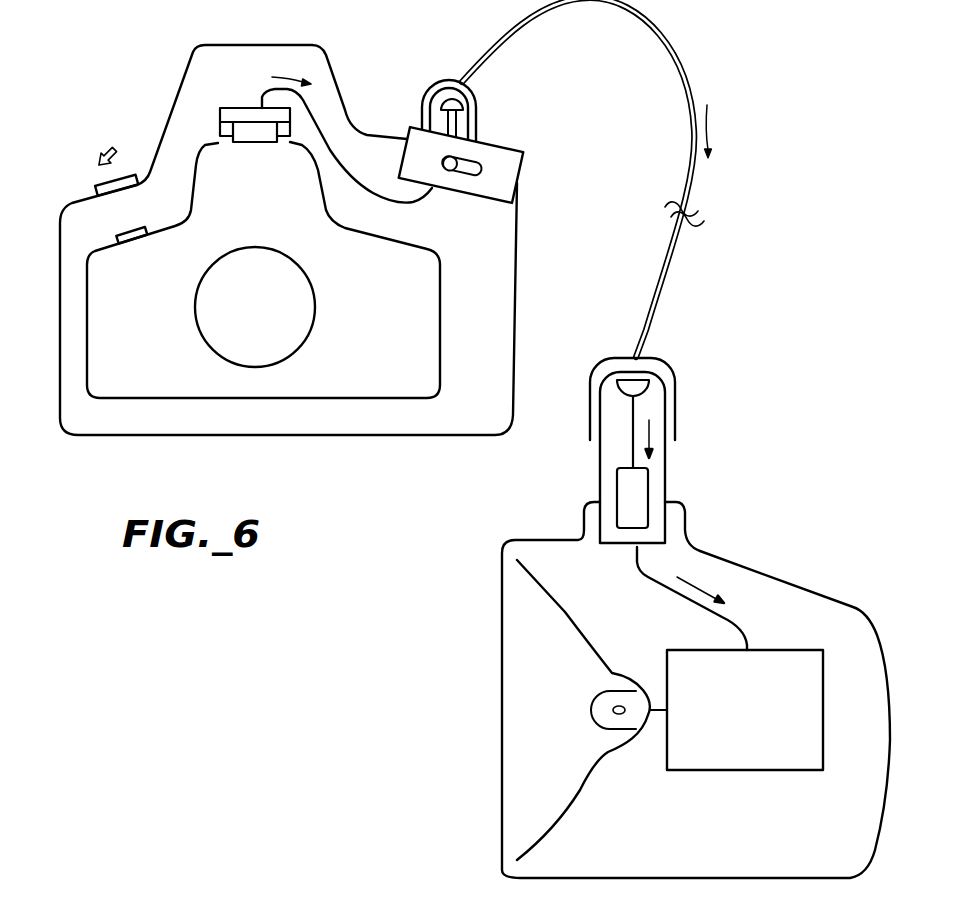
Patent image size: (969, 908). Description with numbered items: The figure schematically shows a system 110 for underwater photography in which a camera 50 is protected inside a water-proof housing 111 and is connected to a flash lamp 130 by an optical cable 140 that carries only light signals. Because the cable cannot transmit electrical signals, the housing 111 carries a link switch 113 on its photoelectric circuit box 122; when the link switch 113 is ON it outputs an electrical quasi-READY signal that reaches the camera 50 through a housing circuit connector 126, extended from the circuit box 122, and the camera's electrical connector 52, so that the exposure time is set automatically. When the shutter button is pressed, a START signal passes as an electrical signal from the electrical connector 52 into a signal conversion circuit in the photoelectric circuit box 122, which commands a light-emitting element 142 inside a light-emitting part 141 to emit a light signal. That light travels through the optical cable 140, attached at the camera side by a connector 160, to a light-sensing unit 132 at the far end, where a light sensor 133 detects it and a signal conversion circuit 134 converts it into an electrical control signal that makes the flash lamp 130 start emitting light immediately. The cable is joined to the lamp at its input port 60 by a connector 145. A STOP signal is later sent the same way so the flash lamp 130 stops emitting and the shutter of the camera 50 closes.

The camera 50 is at (167, 380).
The electrical connector 52 is at (250, 142).
The input port 60 is at (685, 533).
The system 110 is at (765, 125).
The water-proof housing 111 is at (330, 437).
The link switch 113 is at (462, 166).
The photoelectric circuit box 122 is at (490, 195).
The housing circuit connector 126 is at (235, 107).
The flash lamp 130 is at (696, 690).
The light-sensing unit 132 is at (597, 460).
The light sensor 133 is at (632, 382).
The signal conversion circuit 134 is at (633, 493).
The optical cable 140 is at (670, 33).
The light-emitting part 141 is at (457, 125).
The light-emitting element 142 is at (442, 103).
The connector 145 is at (663, 363).
The connector 160 is at (450, 80).